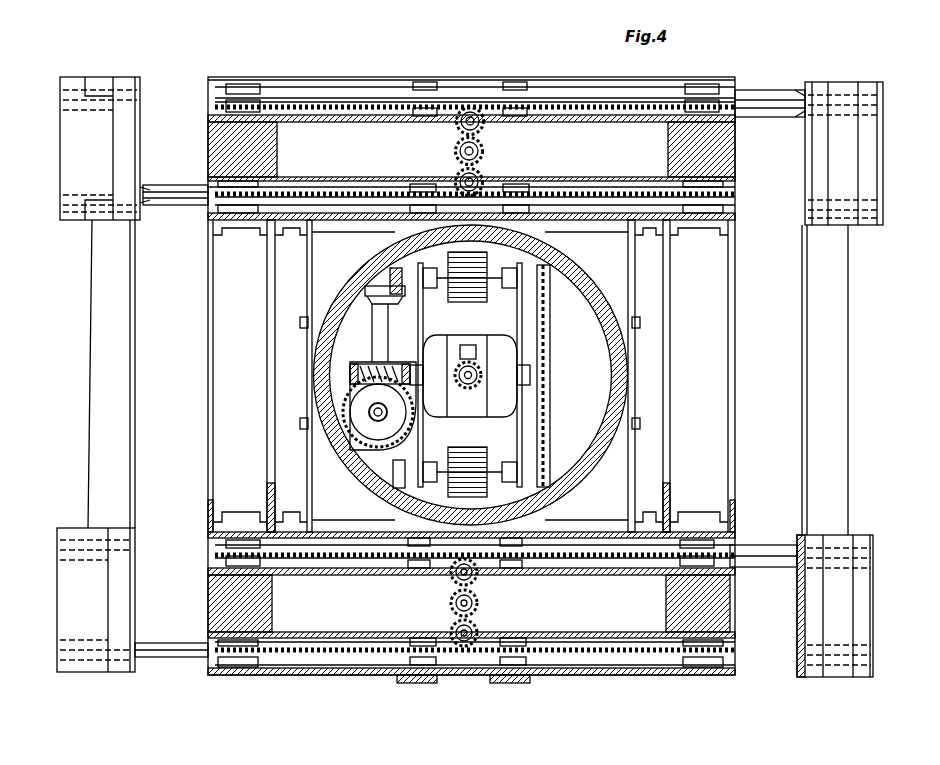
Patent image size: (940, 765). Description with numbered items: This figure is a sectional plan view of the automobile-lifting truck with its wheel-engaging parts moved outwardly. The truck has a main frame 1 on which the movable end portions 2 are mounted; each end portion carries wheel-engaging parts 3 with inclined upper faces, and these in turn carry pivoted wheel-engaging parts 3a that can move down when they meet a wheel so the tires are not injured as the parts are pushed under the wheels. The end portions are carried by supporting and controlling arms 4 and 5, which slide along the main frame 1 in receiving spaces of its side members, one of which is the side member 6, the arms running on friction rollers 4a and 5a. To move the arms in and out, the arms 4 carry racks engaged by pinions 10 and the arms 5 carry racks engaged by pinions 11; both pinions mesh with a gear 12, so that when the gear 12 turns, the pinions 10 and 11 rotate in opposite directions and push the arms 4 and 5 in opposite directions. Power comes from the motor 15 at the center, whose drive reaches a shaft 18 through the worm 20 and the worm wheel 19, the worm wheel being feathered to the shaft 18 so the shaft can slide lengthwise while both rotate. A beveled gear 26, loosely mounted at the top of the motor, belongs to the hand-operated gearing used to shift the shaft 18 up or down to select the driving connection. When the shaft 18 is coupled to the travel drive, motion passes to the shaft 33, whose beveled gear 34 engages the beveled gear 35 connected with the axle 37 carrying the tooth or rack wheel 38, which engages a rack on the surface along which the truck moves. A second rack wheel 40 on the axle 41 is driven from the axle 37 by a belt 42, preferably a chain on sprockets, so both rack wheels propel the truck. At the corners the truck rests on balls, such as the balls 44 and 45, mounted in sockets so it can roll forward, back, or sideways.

The main frame 1 is at (733, 320).
The movable end portion 2 is at (92, 408).
The wheel-engaging part 3 is at (122, 133).
The pivoted wheel-engaging part 3a is at (70, 156).
The supporting and controlling arm 4 is at (767, 104).
The friction roller 4a is at (245, 95).
The supporting and controlling arm 5 is at (172, 196).
The friction roller 5a is at (228, 195).
The side member 6 is at (594, 676).
The pinion 10 is at (484, 176).
The pinion 11 is at (485, 125).
The gear 12 is at (485, 151).
The motor 15 is at (470, 376).
The shaft 18 is at (372, 412).
The worm wheel 19 is at (373, 434).
The worm 20 is at (385, 362).
The beveled gear 26 is at (468, 361).
The shaft 33 is at (372, 340).
The beveled gear 34 is at (360, 268).
The beveled gear 35 is at (392, 272).
The axle 37 is at (495, 288).
The rack wheel 38 is at (466, 302).
The rack wheel 40 is at (465, 447).
The axle 41 is at (492, 470).
The belt 42 is at (551, 374).
The ball 44 is at (225, 138).
The ball 45 is at (206, 591).